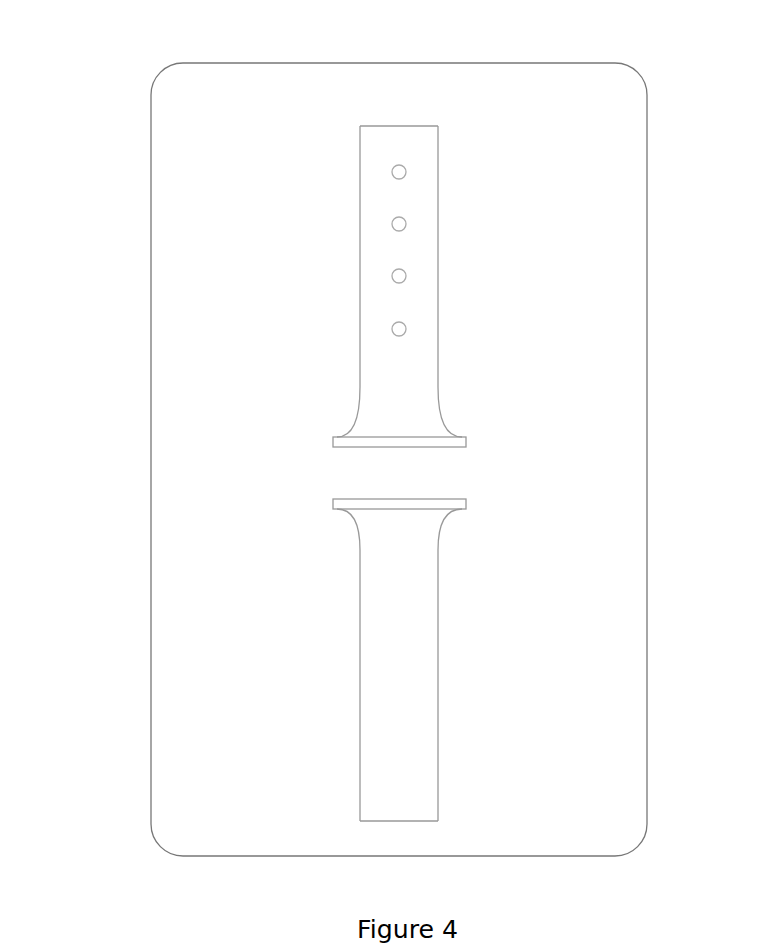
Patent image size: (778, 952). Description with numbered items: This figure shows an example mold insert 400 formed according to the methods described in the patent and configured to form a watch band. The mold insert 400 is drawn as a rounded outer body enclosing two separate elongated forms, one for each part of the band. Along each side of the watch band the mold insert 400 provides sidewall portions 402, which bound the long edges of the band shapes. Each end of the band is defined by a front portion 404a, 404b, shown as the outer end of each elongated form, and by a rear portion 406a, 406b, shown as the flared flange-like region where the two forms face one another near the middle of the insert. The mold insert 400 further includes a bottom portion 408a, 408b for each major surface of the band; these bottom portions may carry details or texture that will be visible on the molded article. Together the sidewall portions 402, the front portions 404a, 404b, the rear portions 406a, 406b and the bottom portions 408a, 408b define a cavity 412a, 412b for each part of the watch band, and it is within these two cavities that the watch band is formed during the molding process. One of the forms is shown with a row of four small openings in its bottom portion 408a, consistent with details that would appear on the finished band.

The mold insert 400 is at (125, 159).
The sidewall portions 402 is at (451, 416).
The front portion 404a is at (400, 126).
The front portion 404b is at (408, 821).
The rear portion 406a is at (400, 445).
The rear portion 406b is at (405, 500).
The bottom portion 408a is at (377, 392).
The bottom portion 408b is at (392, 707).
The cavity 412a is at (399, 301).
The cavity 412b is at (407, 744).